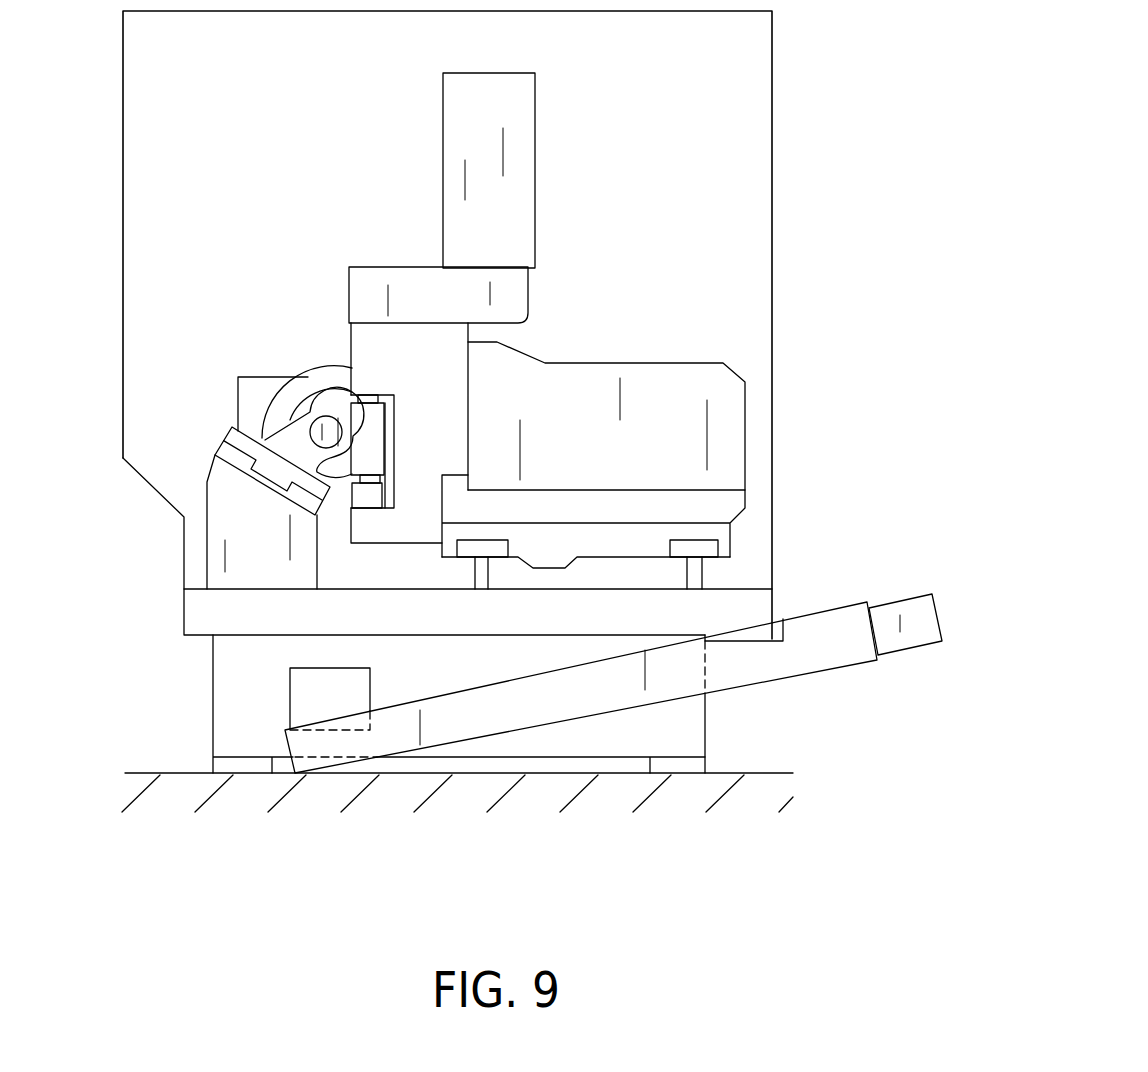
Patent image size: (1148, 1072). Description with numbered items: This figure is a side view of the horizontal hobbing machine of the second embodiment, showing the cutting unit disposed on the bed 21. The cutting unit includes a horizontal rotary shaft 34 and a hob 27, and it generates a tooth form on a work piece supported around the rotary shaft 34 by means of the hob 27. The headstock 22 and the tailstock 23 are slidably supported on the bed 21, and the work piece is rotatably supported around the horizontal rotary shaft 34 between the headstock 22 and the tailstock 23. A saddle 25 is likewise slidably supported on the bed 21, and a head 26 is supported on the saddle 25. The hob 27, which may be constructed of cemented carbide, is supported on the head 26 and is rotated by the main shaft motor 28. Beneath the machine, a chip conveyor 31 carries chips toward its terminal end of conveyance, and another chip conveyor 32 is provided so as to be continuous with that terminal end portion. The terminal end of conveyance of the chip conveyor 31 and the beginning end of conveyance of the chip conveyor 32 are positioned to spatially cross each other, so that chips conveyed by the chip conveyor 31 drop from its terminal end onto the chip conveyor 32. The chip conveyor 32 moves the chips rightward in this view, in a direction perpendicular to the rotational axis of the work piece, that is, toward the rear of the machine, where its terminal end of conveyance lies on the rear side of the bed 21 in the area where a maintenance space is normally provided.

The bed 21 is at (203, 608).
The headstock 22 is at (252, 388).
The tailstock 23 is at (287, 439).
The saddle 25 is at (674, 387).
The head 26 is at (353, 348).
The hob 27 is at (375, 445).
The main shaft motor 28 is at (517, 104).
The chip conveyor 31 is at (315, 687).
The chip conveyor 32 is at (815, 643).
The rotary shaft 34 is at (324, 417).